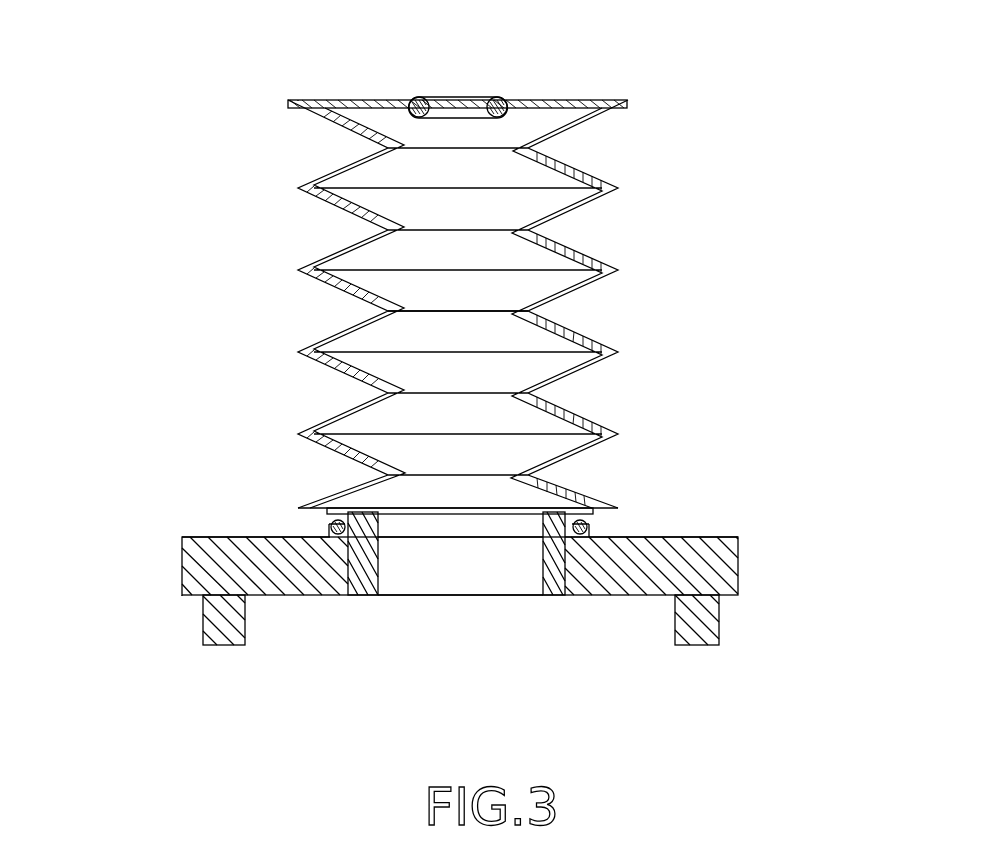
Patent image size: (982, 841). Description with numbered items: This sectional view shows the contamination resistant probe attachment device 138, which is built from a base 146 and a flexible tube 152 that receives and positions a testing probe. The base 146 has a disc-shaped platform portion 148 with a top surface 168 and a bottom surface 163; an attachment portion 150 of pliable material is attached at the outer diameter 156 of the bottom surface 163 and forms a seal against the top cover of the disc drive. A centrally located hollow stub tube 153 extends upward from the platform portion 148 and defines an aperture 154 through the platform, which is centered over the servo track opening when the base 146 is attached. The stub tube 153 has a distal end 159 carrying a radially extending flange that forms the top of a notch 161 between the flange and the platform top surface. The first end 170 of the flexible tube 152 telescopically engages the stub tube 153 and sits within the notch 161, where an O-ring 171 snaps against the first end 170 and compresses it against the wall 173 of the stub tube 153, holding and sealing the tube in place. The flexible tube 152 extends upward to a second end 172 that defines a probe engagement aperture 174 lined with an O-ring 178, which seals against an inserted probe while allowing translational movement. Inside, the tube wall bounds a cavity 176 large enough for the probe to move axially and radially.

The attachment device 138 is at (733, 342).
The base 146 is at (153, 599).
The platform portion 148 is at (738, 563).
The attachment portion 150 is at (720, 618).
The flexible tube 152 is at (578, 246).
The hollow stub tube 153 is at (366, 515).
The aperture 154 is at (498, 557).
The outer diameter 156 is at (200, 537).
The distal end 159 is at (586, 521).
The notch 161 is at (356, 513).
The bottom surface 163 is at (270, 597).
The top surface 168 is at (718, 537).
The first end 170 is at (331, 522).
The O-ring 171 is at (597, 527).
The second end 172 is at (612, 104).
The wall 173 is at (555, 528).
The probe engagement aperture 174 is at (457, 105).
The cavity 176 is at (385, 287).
The O-ring 178 is at (497, 100).